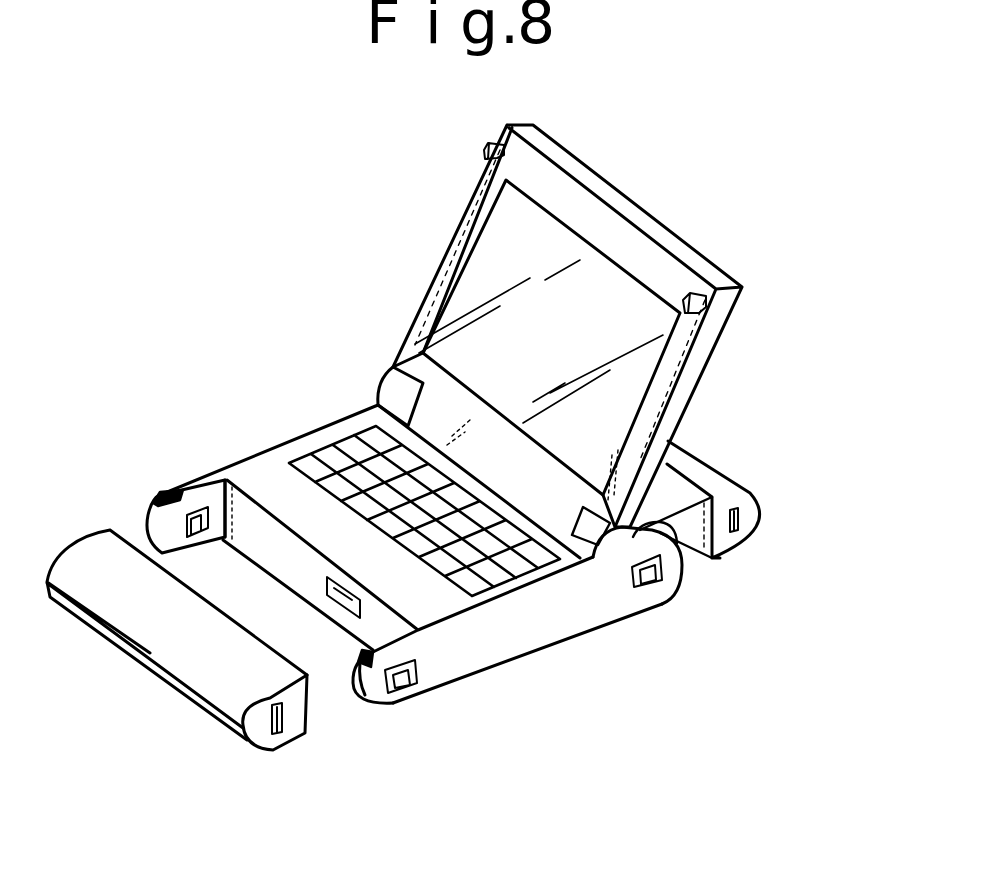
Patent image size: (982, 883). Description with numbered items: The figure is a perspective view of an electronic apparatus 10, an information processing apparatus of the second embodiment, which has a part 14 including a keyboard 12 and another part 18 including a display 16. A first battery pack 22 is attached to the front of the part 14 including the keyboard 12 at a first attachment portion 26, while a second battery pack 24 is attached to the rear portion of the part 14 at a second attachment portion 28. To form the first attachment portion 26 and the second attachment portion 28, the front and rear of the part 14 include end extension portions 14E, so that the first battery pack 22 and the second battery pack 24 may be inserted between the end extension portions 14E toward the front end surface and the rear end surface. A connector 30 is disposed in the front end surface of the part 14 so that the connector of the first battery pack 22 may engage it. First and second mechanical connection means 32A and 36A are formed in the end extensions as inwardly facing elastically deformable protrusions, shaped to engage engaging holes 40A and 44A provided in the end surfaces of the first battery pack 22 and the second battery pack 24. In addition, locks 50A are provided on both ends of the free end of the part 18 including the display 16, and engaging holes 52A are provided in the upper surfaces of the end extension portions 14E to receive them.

The electronic apparatus 10 is at (289, 301).
The keyboard 12 is at (523, 587).
The part including the keyboard 14 is at (550, 573).
The end extension portions 14E is at (208, 482).
The display 16 is at (565, 272).
The part including the display 18 is at (628, 247).
The first battery pack 22 is at (203, 670).
The second battery pack 24 is at (728, 540).
The first attachment portion 26 is at (330, 708).
The second attachment portion 28 is at (683, 552).
The connector 30 is at (340, 605).
The first mechanical connection means 32A is at (183, 520).
The second mechanical connection means 36A is at (650, 582).
The engaging hole 40A is at (283, 732).
The engaging hole 44A is at (740, 518).
The locks 50A is at (484, 152).
The engaging holes 52A is at (170, 492).